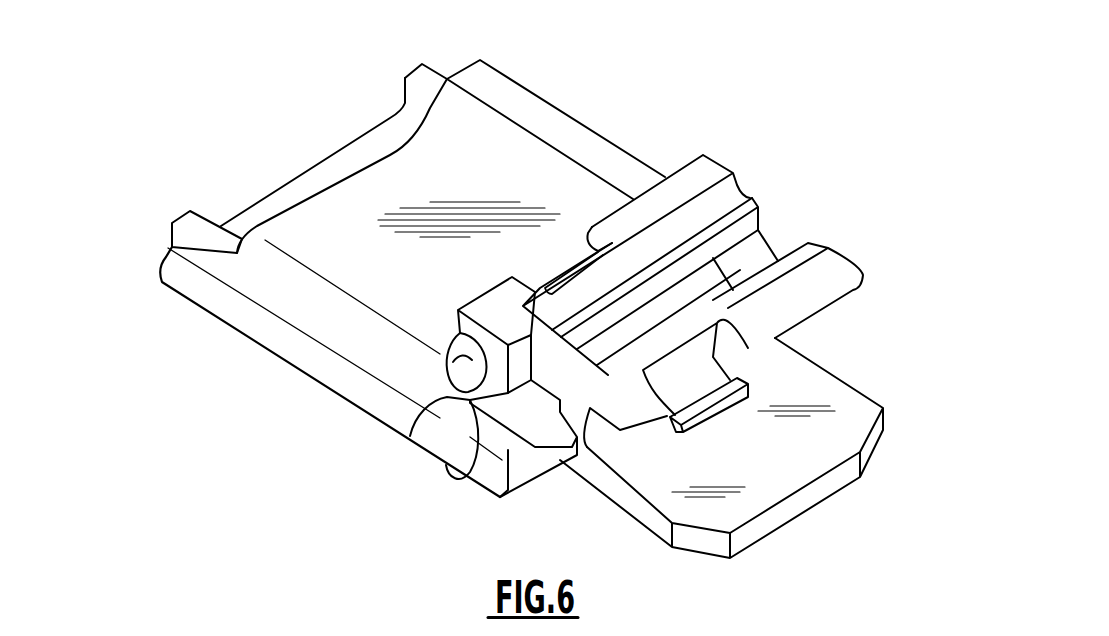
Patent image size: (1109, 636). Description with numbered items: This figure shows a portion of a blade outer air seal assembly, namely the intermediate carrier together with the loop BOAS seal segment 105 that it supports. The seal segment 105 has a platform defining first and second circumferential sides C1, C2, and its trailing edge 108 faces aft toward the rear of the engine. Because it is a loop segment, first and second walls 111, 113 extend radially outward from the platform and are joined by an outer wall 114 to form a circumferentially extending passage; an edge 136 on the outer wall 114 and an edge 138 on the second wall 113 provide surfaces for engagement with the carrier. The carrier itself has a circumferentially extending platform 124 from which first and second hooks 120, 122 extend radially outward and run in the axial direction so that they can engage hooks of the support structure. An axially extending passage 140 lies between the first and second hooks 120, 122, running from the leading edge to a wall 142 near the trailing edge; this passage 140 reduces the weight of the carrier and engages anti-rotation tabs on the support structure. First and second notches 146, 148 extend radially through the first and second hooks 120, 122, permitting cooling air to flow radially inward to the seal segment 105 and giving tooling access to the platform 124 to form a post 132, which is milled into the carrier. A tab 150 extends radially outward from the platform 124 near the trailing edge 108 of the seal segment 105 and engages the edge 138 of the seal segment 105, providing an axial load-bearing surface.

The seal segment 105 is at (340, 372).
The trailing edge 108 is at (459, 474).
The first wall 111 is at (445, 82).
The second wall 113 is at (235, 242).
The outer wall 114 is at (325, 213).
The first hook 120 is at (837, 266).
The second hook 122 is at (710, 173).
The platform 124 is at (820, 385).
The post 132 is at (710, 415).
The edge 136 is at (543, 282).
The edge 138 is at (413, 437).
The passage 140 is at (752, 199).
The wall 142 is at (557, 370).
The first notch 146 is at (748, 348).
The second notch 148 is at (600, 240).
The tab 150 is at (453, 465).
The first circumferential side C1 is at (158, 268).
The second circumferential side C2 is at (508, 497).